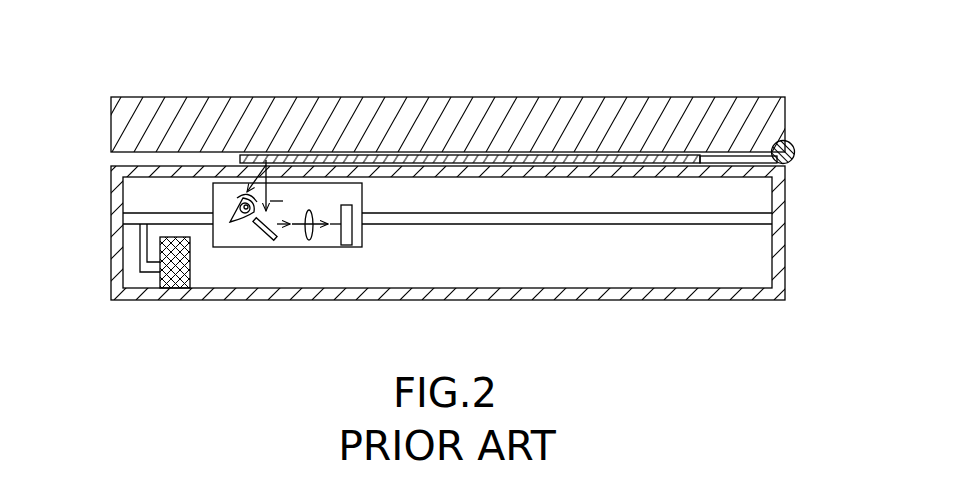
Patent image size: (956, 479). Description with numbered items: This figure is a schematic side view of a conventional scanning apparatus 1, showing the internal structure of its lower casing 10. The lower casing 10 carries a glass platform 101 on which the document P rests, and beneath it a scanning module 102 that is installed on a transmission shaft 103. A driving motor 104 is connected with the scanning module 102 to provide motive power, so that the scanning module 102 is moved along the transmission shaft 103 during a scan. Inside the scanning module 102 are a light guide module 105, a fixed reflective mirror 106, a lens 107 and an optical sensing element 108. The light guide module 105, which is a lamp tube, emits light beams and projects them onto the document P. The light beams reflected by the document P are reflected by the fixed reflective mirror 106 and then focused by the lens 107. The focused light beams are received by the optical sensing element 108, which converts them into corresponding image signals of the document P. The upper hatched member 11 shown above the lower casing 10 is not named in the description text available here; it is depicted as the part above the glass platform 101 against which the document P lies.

The scanning apparatus 1 is at (207, 58).
The display panel 11 is at (637, 108).
The document P is at (682, 155).
The lower casing 10 is at (115, 270).
The glass platform 101 is at (708, 172).
The scanning module 102 is at (336, 181).
The transmission shaft 103 is at (606, 215).
The driving motor 104 is at (157, 275).
The light guide module 105 is at (230, 204).
The fixed reflective mirror 106 is at (253, 231).
The lens 107 is at (313, 240).
The optical sensing element 108 is at (351, 237).